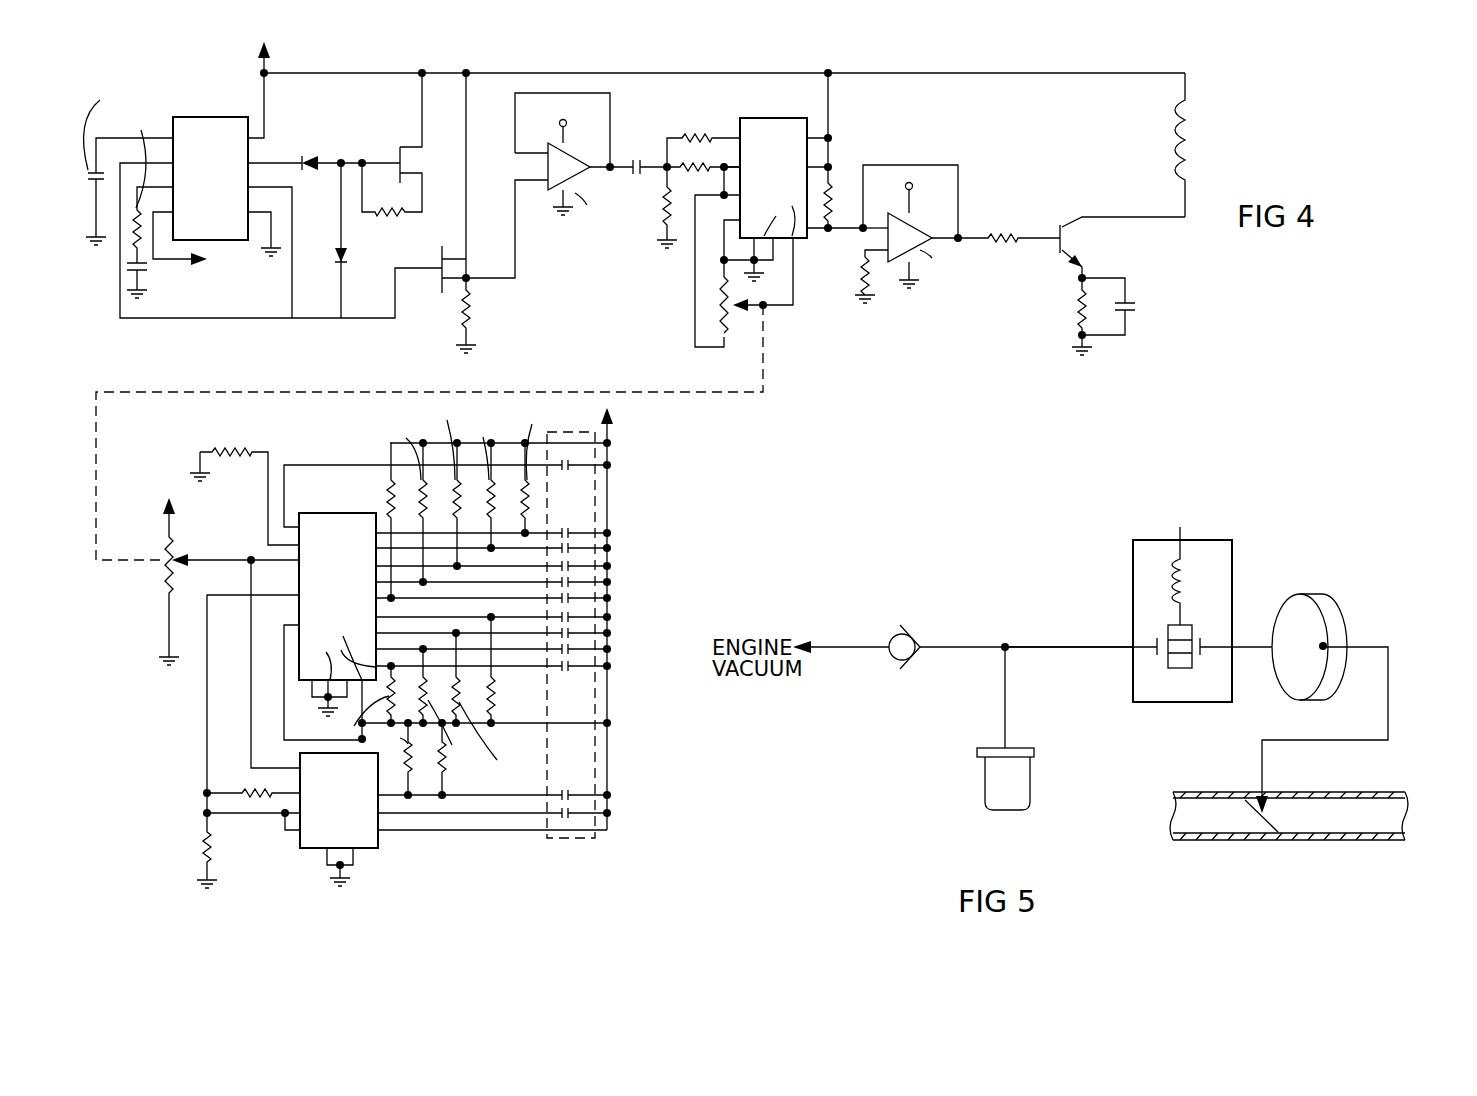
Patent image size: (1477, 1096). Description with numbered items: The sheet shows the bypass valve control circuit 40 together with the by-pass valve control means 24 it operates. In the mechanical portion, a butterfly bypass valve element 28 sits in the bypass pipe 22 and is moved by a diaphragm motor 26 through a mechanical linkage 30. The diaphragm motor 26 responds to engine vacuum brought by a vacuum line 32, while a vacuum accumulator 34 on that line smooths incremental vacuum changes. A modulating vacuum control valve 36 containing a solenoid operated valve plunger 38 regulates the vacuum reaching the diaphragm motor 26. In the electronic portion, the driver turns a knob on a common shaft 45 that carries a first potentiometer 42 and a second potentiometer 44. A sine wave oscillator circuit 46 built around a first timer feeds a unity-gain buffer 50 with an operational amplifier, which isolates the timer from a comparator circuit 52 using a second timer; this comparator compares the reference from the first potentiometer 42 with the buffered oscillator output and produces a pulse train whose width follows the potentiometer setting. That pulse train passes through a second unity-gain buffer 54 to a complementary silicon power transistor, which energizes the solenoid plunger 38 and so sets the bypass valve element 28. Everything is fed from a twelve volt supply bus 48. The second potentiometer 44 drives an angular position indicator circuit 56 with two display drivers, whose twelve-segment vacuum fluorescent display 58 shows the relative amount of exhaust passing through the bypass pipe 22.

In FIG. 5, the bypass pipe 22 is at (1212, 840).
In FIG. 5, the by-pass valve control means 24 is at (1072, 578).
In FIG. 5, the diaphragm motor 26 is at (1325, 612).
In FIG. 5, the butterfly bypass valve element 28 is at (1275, 823).
In FIG. 5, the mechanical linkage 30 is at (1388, 692).
In FIG. 5, the vacuum line 32 is at (1060, 643).
In FIG. 5, the vacuum accumulator 34 is at (993, 782).
In FIG. 5, the modulating vacuum control valve 36 is at (1142, 543).
In FIG. 4, the solenoid operated valve plunger 38 is at (1197, 147).
In FIG. 5, the solenoid operated valve plunger 38 is at (1190, 562).
In FIG. 4, the bypass valve control circuit 40 is at (1180, 243).
In FIG. 4, the first potentiometer 42 is at (771, 290).
In FIG. 4, the second potentiometer 44 is at (167, 568).
In FIG. 4, the common shaft 45 is at (763, 392).
In FIG. 4, the sine wave oscillator circuit 46 is at (502, 352).
In FIG. 4, the 12 volt supply bus 48 is at (965, 73).
In FIG. 4, the unity-gain buffer 50 is at (645, 352).
In FIG. 4, the comparator circuit 52 is at (761, 232).
In FIG. 4, the unity-gain buffer 54 is at (968, 352).
In FIG. 4, the angular position indicator circuit 56 is at (421, 643).
In FIG. 4, the display 58 is at (585, 825).